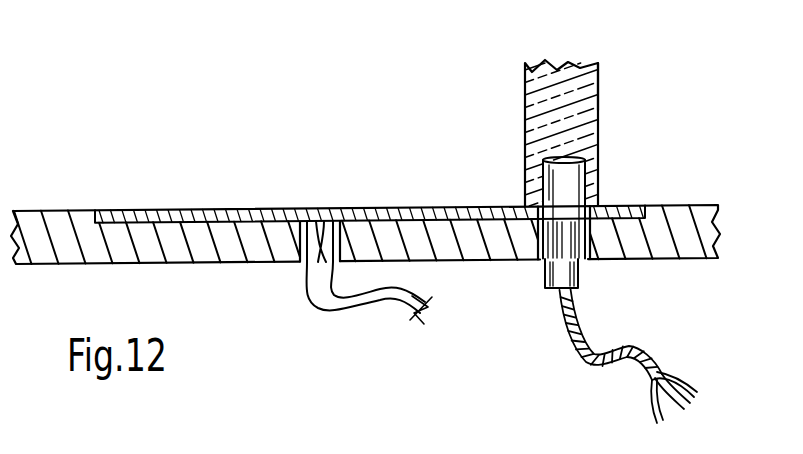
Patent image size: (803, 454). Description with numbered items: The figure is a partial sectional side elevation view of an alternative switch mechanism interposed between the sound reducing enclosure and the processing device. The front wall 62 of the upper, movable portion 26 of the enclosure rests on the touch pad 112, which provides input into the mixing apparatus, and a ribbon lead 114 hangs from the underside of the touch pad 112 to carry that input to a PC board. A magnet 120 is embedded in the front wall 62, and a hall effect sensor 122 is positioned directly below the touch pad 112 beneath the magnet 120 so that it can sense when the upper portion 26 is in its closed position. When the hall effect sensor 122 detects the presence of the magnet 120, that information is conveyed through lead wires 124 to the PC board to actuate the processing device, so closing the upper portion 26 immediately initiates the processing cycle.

The upper, movable portion 26 is at (606, 66).
The front wall 62 is at (600, 108).
The touch pad 112 is at (212, 211).
The ribbon lead 114 is at (368, 302).
The magnet 120 is at (568, 188).
The hall effect sensor 122 is at (563, 273).
The lead wires 124 is at (648, 353).